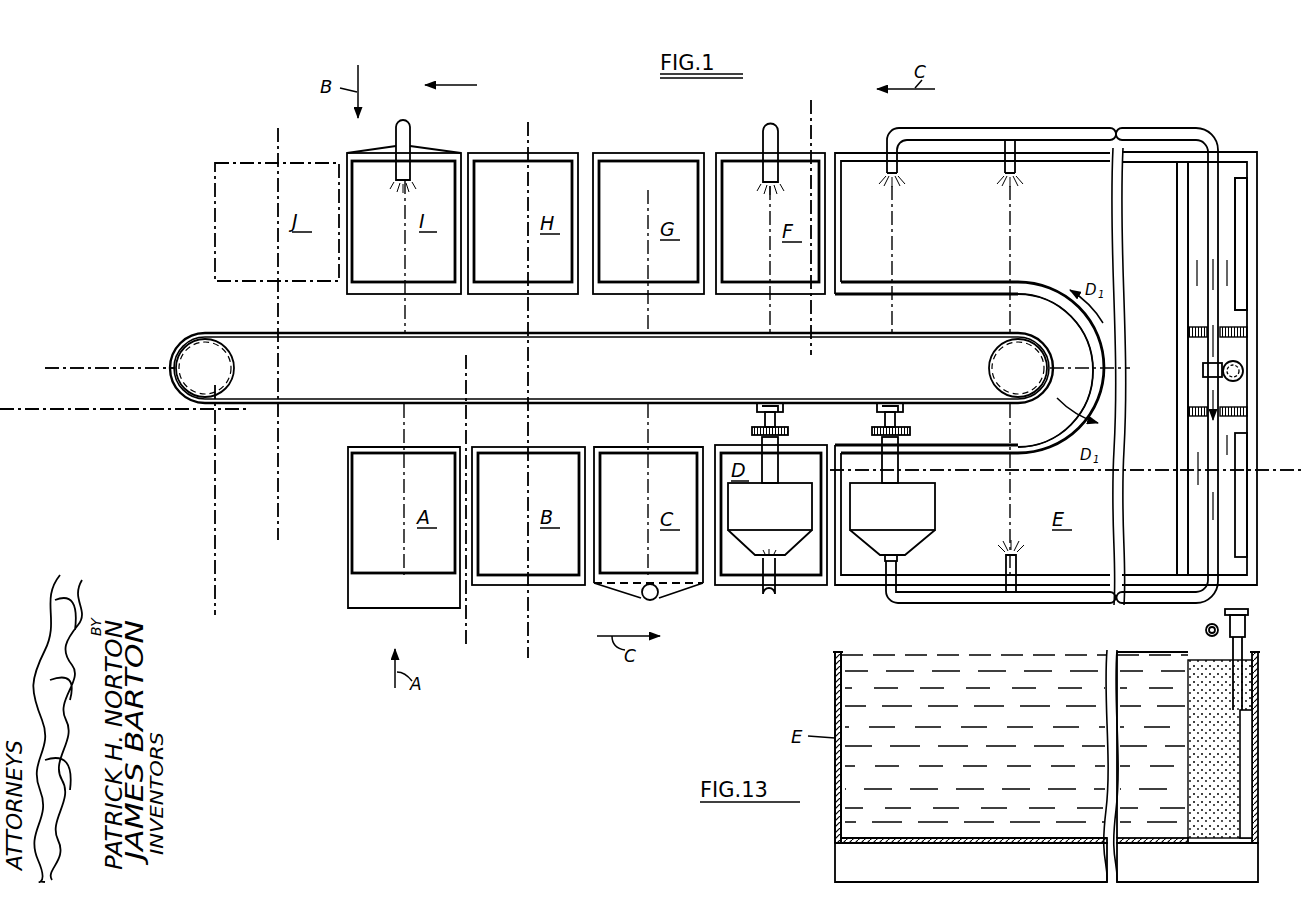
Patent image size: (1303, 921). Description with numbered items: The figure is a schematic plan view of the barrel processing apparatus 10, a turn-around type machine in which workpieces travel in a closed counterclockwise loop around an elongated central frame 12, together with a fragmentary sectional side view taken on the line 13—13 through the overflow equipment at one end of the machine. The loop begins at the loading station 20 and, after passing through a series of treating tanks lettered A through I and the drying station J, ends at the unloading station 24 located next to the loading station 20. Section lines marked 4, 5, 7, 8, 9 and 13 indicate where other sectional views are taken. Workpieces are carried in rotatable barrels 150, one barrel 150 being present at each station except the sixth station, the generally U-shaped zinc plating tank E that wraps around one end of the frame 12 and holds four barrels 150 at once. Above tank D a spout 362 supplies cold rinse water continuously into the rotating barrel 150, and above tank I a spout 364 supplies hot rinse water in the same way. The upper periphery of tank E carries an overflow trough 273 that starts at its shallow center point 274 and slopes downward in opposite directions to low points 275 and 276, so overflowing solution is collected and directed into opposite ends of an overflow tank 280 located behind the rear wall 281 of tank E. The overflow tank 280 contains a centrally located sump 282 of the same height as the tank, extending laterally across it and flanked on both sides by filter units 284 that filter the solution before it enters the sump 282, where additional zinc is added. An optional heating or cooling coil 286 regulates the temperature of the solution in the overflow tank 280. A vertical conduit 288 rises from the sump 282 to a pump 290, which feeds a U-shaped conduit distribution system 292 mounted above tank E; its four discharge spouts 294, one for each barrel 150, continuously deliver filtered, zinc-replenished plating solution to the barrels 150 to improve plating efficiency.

In FIG. 1, the central frame 12 is at (304, 413).
In FIG. 1, the loading station 20 is at (297, 583).
In FIG. 1, the unloading station 24 is at (128, 365).
In FIG. 1, the barrel 150 is at (796, 516).
In FIG. 1, the overflow trough 273 is at (957, 266).
In FIG. 13, the overflow trough 273 is at (893, 648).
In FIG. 1, the center point of overflow trough 274 is at (1088, 390).
In FIG. 1, the low point of overflow trough 275 is at (1186, 157).
In FIG. 1, the low point of overflow trough 276 is at (1186, 578).
In FIG. 1, the overflow tank 280 is at (1250, 165).
In FIG. 1, the rear wall 281 is at (1186, 237).
In FIG. 1, the sump 282 is at (1205, 371).
In FIG. 1, the filter unit 284 is at (1207, 339).
In FIG. 1, the heating coil 286 is at (1243, 301).
In FIG. 13, the conduit 288 is at (1230, 649).
In FIG. 1, the pump 290 is at (1233, 419).
In FIG. 13, the pump 290 is at (1225, 613).
In FIG. 1, the conduit distribution system 292 is at (1048, 112).
In FIG. 1, the discharge spout 294 is at (893, 569).
In FIG. 1, the spout 362 is at (770, 147).
In FIG. 1, the spout 364 is at (404, 137).
In FIG. 1, the section line for FIG. 4 is at (213, 390).
In FIG. 1, the section line for FIG. 5 is at (526, 122).
In FIG. 1, the section line for FIG. 7 is at (464, 380).
In FIG. 1, the section line for FIG. 8 is at (813, 118).
In FIG. 1, the section line for FIG. 9 is at (276, 132).
In FIG. 1, the barrel processing apparatus 10 is at (13, 412).
In FIG. 1, the section line for FIG. 13 is at (829, 470).